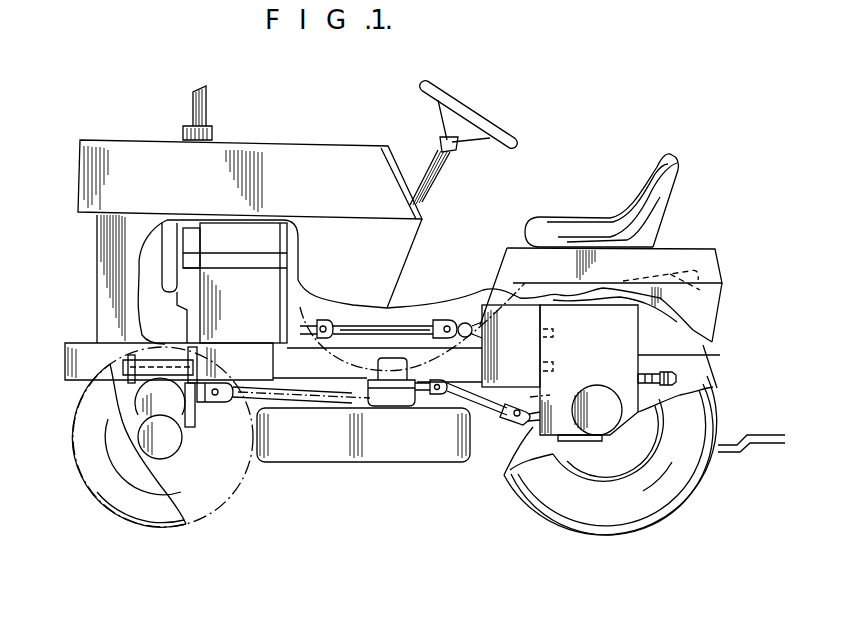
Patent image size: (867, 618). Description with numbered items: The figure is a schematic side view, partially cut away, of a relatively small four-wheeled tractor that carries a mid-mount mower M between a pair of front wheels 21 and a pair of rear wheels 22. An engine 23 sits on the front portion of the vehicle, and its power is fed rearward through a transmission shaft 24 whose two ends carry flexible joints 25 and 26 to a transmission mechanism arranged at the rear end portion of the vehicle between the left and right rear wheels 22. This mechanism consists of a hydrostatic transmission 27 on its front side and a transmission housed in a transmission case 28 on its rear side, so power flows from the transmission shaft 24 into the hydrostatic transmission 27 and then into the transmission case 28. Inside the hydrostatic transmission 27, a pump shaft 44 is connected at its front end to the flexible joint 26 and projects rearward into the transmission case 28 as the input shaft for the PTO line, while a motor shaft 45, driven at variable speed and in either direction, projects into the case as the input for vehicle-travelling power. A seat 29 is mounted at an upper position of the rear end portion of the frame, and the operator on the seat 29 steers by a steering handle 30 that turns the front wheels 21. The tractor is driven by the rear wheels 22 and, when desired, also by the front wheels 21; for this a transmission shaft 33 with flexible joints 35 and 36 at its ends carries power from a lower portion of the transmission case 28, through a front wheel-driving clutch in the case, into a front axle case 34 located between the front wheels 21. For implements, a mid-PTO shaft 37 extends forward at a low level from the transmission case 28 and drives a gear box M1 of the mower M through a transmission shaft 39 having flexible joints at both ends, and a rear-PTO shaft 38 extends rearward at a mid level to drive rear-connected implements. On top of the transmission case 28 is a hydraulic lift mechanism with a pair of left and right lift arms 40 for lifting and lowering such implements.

The front wheels 21 is at (153, 512).
The rear wheels 22 is at (668, 465).
The engine 23 is at (262, 258).
The transmission shaft 24 is at (405, 324).
The flexible joint 25 is at (330, 318).
The flexible joint 26 is at (460, 338).
The hydrostatic transmission 27 is at (520, 335).
The transmission case 28 is at (620, 357).
The seat 29 is at (643, 190).
The steering handle 30 is at (484, 122).
The transmission shaft 33 is at (318, 398).
The front axle case 34 is at (153, 408).
The flexible joint 35 is at (548, 400).
The flexible joint 36 is at (215, 404).
The mid-PTO shaft 37 is at (515, 424).
The rear-PTO shaft 38 is at (653, 372).
The transmission shaft 39 is at (455, 402).
The lift arms 40 is at (672, 275).
The pump shaft 44 is at (552, 333).
The motor shaft 45 is at (550, 363).
The mower M is at (393, 440).
The gear box M1 is at (400, 393).